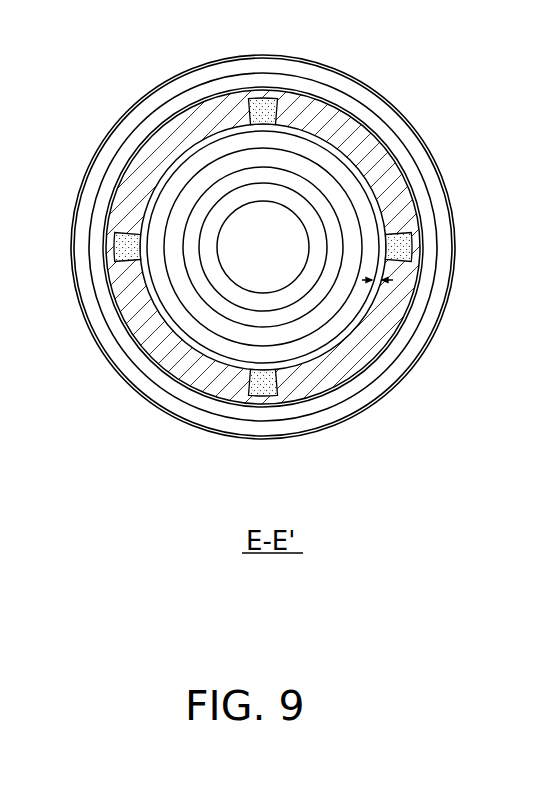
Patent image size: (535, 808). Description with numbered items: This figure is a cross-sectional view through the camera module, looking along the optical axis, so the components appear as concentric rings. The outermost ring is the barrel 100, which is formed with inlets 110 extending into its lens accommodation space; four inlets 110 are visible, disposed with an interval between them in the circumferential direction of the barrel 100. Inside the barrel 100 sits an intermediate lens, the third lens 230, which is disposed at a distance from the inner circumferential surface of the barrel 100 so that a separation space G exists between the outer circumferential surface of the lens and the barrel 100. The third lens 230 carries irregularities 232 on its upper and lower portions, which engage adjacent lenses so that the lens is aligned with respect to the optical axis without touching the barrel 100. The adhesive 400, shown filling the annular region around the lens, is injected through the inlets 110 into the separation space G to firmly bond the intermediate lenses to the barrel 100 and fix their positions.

The barrel 100 is at (377, 160).
The inlets 110 is at (263, 99).
The third lens 230 is at (188, 328).
The irregularities 232 is at (308, 167).
The adhesive 400 is at (182, 155).
The separation space G is at (378, 295).